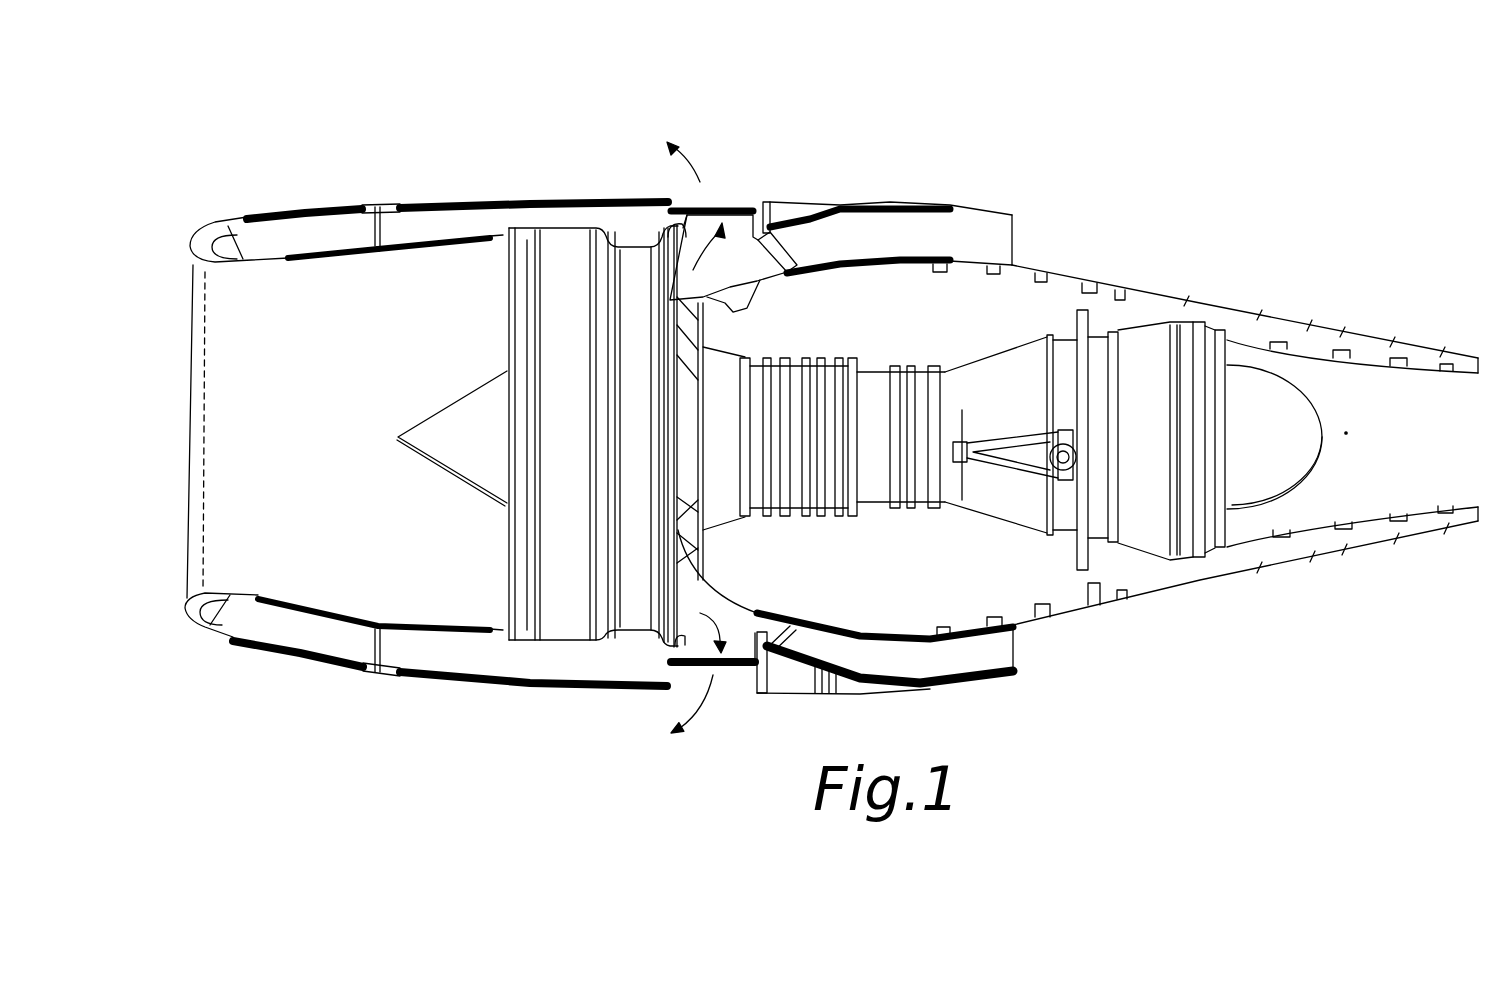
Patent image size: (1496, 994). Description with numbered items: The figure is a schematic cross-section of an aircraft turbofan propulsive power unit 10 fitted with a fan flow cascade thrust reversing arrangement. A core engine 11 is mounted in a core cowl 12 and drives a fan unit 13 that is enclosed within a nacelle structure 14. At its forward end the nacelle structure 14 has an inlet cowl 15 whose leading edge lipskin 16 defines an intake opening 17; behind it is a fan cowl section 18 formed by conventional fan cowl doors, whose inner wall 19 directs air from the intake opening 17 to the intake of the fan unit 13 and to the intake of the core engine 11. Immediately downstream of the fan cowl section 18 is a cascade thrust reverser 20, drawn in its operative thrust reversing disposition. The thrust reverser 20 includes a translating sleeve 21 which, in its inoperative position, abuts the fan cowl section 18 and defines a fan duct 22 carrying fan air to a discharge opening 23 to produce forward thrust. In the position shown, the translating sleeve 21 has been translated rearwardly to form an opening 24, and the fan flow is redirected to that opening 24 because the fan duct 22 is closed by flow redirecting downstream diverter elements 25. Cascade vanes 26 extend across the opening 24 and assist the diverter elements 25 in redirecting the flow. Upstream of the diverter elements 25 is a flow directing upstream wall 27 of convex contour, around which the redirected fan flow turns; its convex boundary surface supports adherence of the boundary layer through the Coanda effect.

The aircraft turbofan propulsive power unit 10 is at (1089, 701).
The core engine 11 is at (1002, 363).
The core cowl 12 is at (1172, 583).
The fan unit 13 is at (560, 523).
The nacelle structure 14 is at (312, 669).
The inlet cowl 15 is at (313, 226).
The leading edge lipskin 16 is at (213, 261).
The intake opening 17 is at (236, 414).
The fan cowl section 18 is at (482, 217).
The inner wall 19 is at (430, 243).
The cascade thrust reverser 20 is at (745, 161).
The translating sleeve 21 is at (840, 203).
The fan duct 22 is at (890, 250).
The discharge opening 23 is at (1022, 221).
The opening 24 is at (734, 192).
The flow redirecting downstream diverter elements 25 is at (783, 263).
The cascade vanes 26 is at (766, 201).
The flow directing upstream wall 27 is at (693, 207).